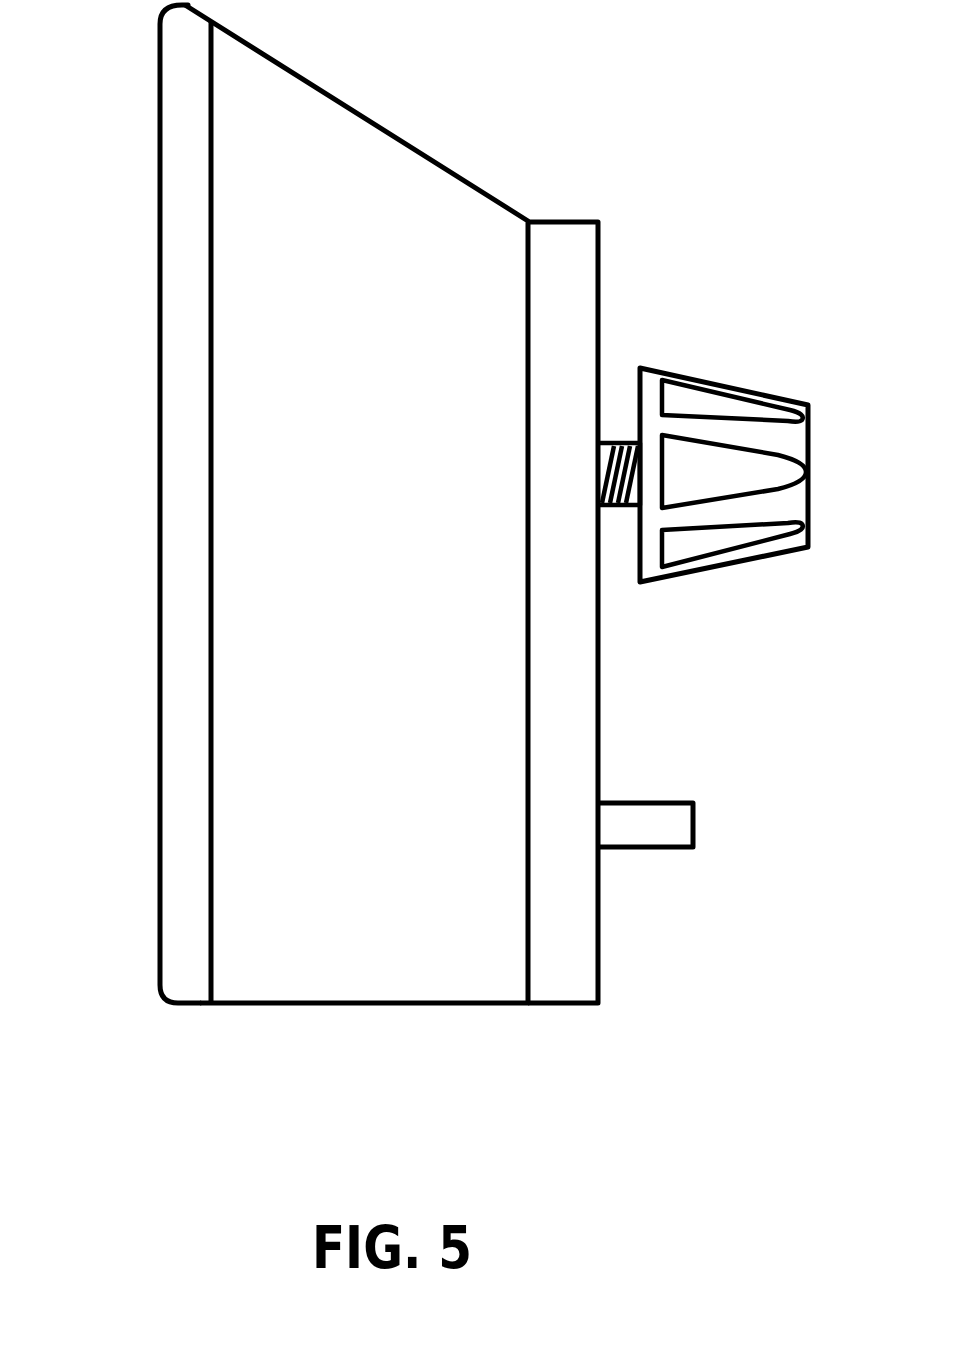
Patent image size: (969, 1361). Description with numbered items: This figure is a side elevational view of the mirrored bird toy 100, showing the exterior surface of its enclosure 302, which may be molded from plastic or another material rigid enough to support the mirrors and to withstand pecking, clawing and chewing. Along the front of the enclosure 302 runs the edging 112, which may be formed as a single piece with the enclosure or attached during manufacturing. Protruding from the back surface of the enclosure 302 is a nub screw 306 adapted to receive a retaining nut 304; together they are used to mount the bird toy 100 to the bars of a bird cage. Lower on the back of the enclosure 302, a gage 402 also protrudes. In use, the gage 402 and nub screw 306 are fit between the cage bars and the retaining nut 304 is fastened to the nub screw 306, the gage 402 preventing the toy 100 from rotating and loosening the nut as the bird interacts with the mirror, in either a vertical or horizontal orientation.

The bird toy 100 is at (652, 124).
The edging 112 is at (180, 84).
The enclosure 302 is at (490, 190).
The retaining nut 304 is at (808, 442).
The nub screw 306 is at (612, 508).
The gage 402 is at (687, 822).